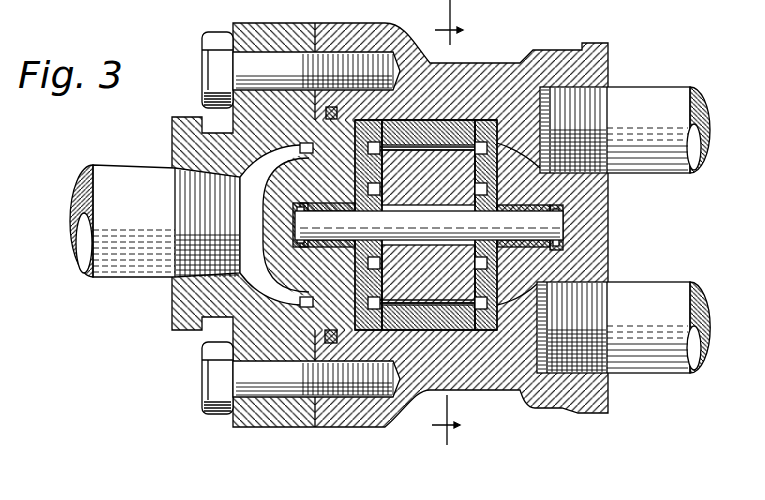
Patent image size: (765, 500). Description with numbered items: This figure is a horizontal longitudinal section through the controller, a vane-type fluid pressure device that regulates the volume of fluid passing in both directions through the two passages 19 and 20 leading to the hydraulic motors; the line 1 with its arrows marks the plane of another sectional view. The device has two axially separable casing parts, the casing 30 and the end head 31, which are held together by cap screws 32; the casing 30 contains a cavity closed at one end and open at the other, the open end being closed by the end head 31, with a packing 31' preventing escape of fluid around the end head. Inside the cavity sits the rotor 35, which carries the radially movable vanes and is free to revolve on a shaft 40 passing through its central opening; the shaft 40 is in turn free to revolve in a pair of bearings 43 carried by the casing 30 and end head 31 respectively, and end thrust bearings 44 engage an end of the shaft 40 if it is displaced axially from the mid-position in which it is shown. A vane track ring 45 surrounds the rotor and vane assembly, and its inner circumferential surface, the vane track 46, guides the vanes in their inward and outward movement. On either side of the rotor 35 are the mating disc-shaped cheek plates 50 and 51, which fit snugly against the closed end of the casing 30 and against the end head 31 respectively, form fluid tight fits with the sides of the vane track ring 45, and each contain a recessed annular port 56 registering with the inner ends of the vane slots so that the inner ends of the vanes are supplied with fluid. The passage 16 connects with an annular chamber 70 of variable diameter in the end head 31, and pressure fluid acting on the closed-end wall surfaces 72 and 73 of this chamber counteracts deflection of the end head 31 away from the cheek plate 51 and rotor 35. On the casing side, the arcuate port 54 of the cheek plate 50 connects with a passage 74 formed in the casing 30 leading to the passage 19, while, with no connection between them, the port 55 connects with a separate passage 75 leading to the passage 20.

The section line 1- 1 is at (438, 224).
The passage 16 is at (148, 172).
The passage 19 is at (668, 290).
The passage 20 is at (658, 96).
The casing 30 is at (490, 65).
The end head 31 is at (263, 229).
The packing 31' is at (297, 225).
The cap screws 32 is at (208, 78).
The rotor 35 is at (437, 190).
The shaft 40 is at (429, 225).
The bearings 43 is at (315, 196).
The end thrust bearings 44 is at (292, 242).
The vane track ring 45 is at (445, 130).
The vane track 46 is at (410, 148).
The cheek plate 50 is at (497, 118).
The cheek plate 51 is at (378, 122).
The port 54 is at (368, 303).
The port 55 is at (368, 147).
The annular groove or port 56 is at (368, 188).
The annular chamber 70 is at (258, 165).
The wall surface 72 is at (242, 243).
The wall surface 73 is at (305, 143).
The passage 74 is at (522, 312).
The passage 75 is at (537, 165).